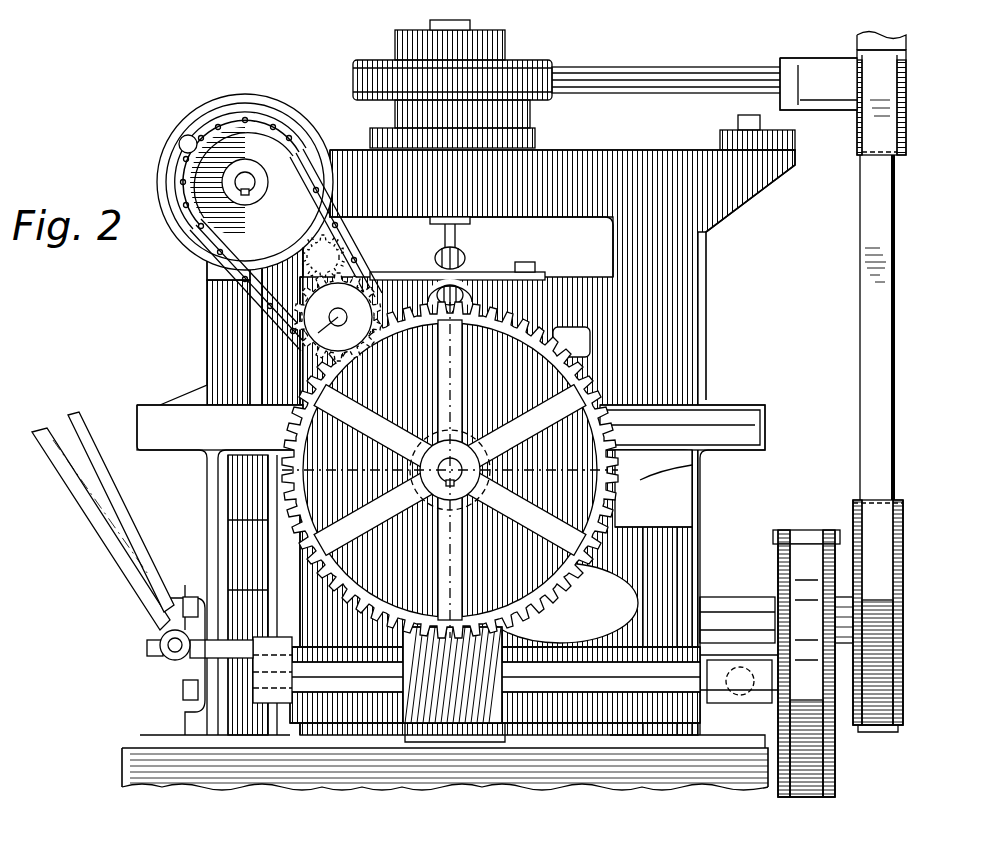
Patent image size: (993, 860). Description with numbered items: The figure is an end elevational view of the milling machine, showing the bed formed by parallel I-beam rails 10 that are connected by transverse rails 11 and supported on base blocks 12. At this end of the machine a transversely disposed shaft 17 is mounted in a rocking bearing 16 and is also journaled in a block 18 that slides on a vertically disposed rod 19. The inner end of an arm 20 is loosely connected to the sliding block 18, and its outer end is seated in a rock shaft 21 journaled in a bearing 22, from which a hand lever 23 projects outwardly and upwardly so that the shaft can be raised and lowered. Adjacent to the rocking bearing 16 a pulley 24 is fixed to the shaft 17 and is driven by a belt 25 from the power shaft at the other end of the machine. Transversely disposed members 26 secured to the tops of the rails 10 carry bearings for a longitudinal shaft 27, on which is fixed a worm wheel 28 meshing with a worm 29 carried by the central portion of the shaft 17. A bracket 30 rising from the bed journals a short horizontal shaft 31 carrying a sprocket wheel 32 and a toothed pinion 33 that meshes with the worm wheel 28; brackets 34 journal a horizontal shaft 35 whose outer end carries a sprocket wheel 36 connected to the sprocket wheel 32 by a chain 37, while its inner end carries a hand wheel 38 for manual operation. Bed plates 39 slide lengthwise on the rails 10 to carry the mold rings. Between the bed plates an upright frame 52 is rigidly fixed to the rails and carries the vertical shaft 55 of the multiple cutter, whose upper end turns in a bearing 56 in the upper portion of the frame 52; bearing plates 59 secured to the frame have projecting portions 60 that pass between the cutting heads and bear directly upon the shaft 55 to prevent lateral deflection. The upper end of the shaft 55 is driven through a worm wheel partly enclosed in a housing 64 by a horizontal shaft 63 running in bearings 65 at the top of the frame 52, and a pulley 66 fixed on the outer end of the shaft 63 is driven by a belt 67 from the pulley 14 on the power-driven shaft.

The rails 10 is at (208, 478).
The transverse rails 11 is at (628, 568).
The base blocks 12 is at (130, 766).
The pulley 14 is at (904, 573).
The rocking bearing 16 is at (740, 660).
The shaft 17 is at (358, 670).
The block 18 is at (292, 652).
The rod 19 is at (228, 543).
The arm 20 is at (205, 660).
The rock shaft 21 is at (162, 656).
The bearing 22 is at (165, 625).
The hand lever 23 is at (70, 495).
The pulley 24 is at (835, 762).
The belt 25 is at (802, 540).
The transversely disposed members 26 is at (450, 470).
The shaft 27 is at (438, 472).
The worm wheel 28 is at (524, 470).
The worm 29 is at (488, 660).
The bracket 30 is at (235, 385).
The shaft 31 is at (320, 330).
The sprocket wheel 32 is at (330, 312).
The toothed pinion 33 is at (323, 257).
The brackets 34 is at (228, 285).
The shaft 35 is at (243, 190).
The sprocket wheel 36 is at (200, 165).
The chain 37 is at (356, 246).
The hand wheel 38 is at (242, 98).
The bed plates 39 is at (730, 432).
The upright frame 52 is at (700, 258).
The shaft 55 is at (460, 240).
The bearing 56 is at (530, 121).
The bearing plates 59 is at (540, 278).
The projecting portions 60 is at (438, 283).
The shaft 63 is at (663, 58).
The housing 64 is at (353, 72).
The bearings 65 is at (505, 46).
The pulley 66 is at (906, 80).
The belt 67 is at (898, 287).